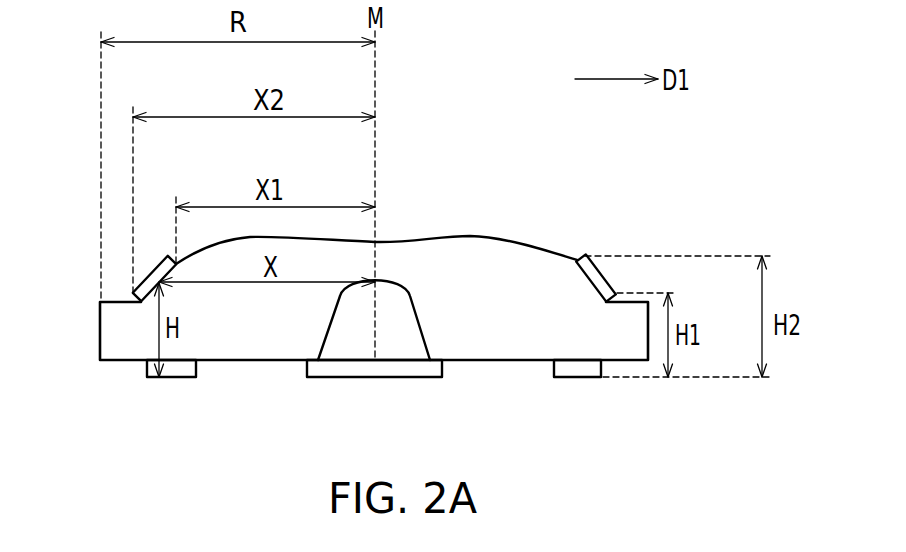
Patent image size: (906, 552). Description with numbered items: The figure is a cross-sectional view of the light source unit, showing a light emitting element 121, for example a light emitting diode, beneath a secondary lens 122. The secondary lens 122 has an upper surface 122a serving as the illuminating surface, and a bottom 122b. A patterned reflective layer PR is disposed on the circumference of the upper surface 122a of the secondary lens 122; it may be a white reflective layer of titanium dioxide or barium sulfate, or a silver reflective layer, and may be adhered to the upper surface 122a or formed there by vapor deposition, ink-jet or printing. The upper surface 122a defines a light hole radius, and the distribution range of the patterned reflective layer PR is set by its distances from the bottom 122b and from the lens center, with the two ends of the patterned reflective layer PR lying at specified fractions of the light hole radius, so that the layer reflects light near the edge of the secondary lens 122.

The light emitting element 121 is at (373, 378).
The secondary lens 122 is at (376, 217).
The upper surface 122a is at (433, 234).
The bottom 122b is at (168, 381).
The patterned reflective layer PR is at (153, 279).